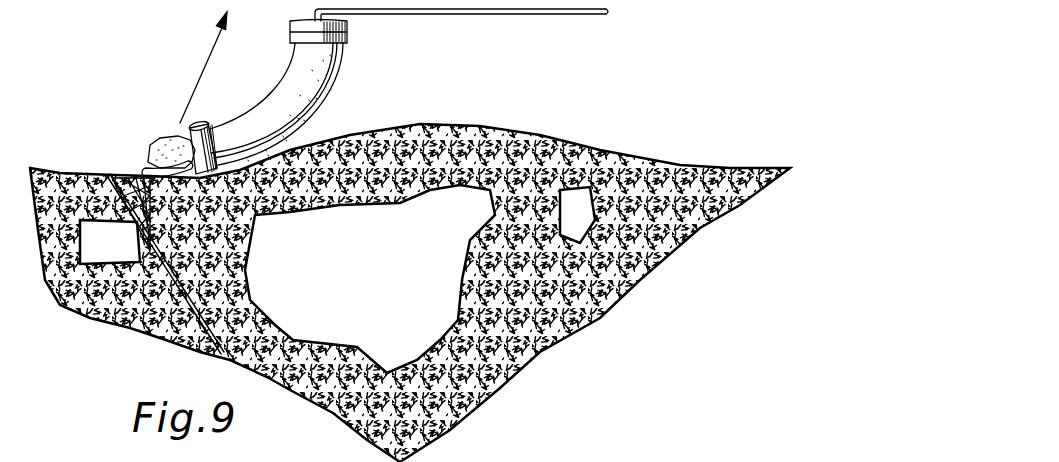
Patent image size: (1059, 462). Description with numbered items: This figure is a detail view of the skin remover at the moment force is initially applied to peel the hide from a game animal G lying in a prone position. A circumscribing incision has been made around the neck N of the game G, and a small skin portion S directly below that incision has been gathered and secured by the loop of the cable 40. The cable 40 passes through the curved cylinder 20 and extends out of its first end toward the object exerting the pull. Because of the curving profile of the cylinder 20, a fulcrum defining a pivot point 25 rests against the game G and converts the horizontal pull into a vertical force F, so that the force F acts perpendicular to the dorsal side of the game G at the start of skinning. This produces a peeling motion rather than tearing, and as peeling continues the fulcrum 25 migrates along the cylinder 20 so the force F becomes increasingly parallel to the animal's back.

The cylinder 20 is at (330, 88).
The cable 40 is at (460, 13).
The pivot point 25 is at (432, 293).
The game animal G is at (410, 293).
The neck N is at (112, 178).
The small skin portion S is at (160, 148).
The force F is at (204, 67).